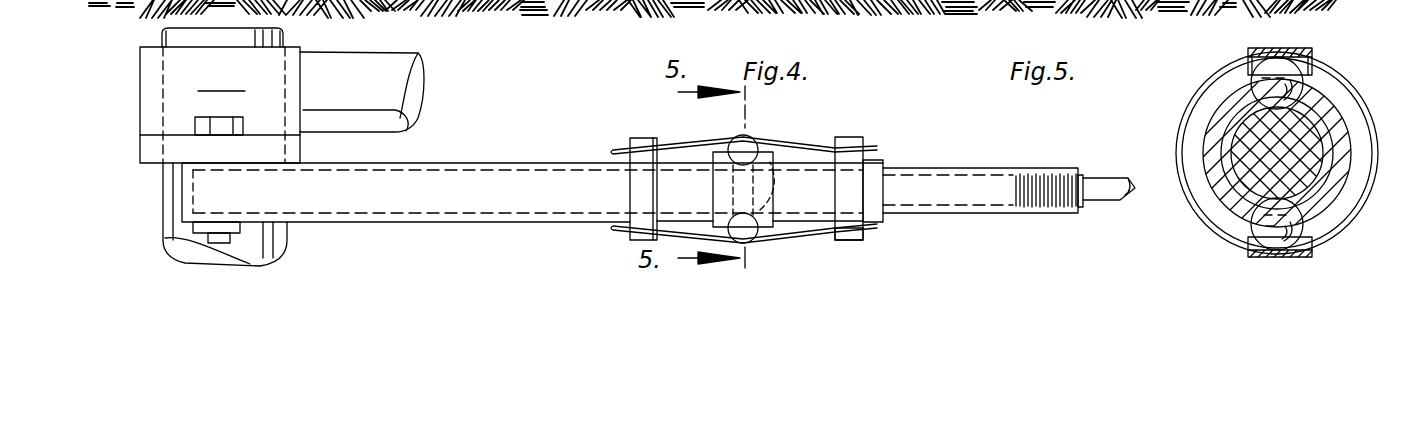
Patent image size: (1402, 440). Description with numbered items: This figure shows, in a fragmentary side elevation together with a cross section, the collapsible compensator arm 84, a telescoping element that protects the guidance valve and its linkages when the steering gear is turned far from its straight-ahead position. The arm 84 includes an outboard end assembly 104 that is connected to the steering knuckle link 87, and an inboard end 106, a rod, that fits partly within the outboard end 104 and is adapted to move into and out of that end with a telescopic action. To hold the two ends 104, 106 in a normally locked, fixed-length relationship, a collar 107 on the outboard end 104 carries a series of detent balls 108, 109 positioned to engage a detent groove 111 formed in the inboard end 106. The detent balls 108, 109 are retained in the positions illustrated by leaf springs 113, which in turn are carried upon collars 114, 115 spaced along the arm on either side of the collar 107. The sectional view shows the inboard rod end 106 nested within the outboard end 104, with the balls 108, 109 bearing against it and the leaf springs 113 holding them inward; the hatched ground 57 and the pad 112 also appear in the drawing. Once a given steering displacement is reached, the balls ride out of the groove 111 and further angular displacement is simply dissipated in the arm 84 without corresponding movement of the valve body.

In FIG. 4, the ground 57 is at (462, 12).
In FIG. 4, the collapsible compensator arm 84 is at (965, 158).
In FIG. 4, the steering knuckle link 87 is at (282, 147).
In FIG. 4, the outboard end assembly 104 is at (468, 160).
In FIG. 5, the outboard end assembly 104 is at (1210, 142).
In FIG. 4, the inboard end 106 is at (1013, 165).
In FIG. 5, the inboard end 106 is at (1235, 160).
In FIG. 4, the collar 107 is at (758, 168).
In FIG. 4, the detent ball 108 is at (737, 147).
In FIG. 5, the detent ball 108 is at (1290, 73).
In FIG. 4, the detent ball 109 is at (753, 230).
In FIG. 5, the detent ball 109 is at (1257, 213).
In FIG. 4, the detent groove 111 is at (773, 193).
In FIG. 5, the upper pad 112 is at (1292, 50).
In FIG. 4, the leaf spring 113 is at (672, 148).
In FIG. 5, the leaf spring 113 is at (1307, 247).
In FIG. 4, the collar 114 is at (632, 188).
In FIG. 4, the collar 115 is at (853, 192).
In FIG. 5, the collar 115 is at (1190, 110).